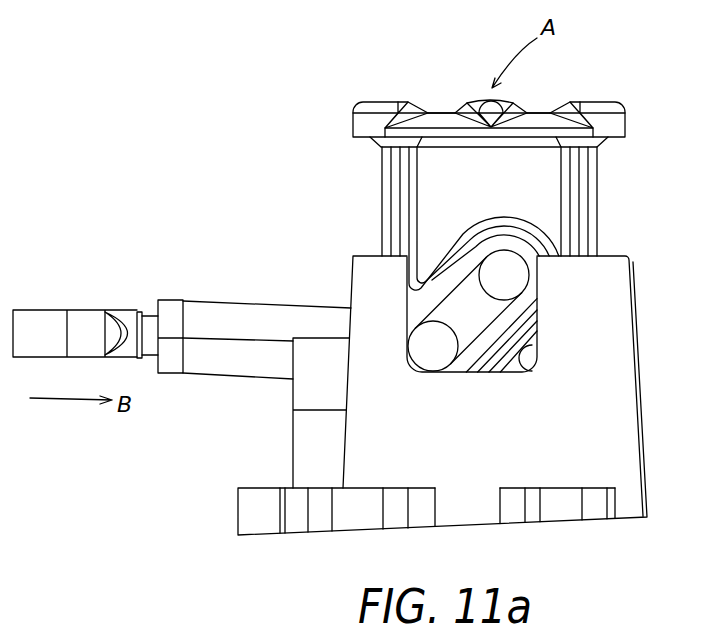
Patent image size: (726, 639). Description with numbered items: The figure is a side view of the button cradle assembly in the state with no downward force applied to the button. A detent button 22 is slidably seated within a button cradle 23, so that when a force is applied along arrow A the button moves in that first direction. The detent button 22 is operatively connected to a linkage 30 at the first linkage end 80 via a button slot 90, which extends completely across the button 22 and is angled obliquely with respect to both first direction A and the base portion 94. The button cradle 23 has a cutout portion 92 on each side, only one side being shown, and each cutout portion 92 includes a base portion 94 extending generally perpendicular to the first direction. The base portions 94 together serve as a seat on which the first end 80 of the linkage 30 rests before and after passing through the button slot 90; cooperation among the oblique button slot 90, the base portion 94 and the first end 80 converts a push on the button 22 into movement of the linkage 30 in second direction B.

The detent button 22 is at (598, 210).
The button cradle 23 is at (627, 450).
The linkage 30 is at (37, 313).
The first linkage end 80 is at (430, 358).
The button slot 90 is at (490, 282).
The cutout portion 92 is at (540, 372).
The base portion 94 is at (493, 358).